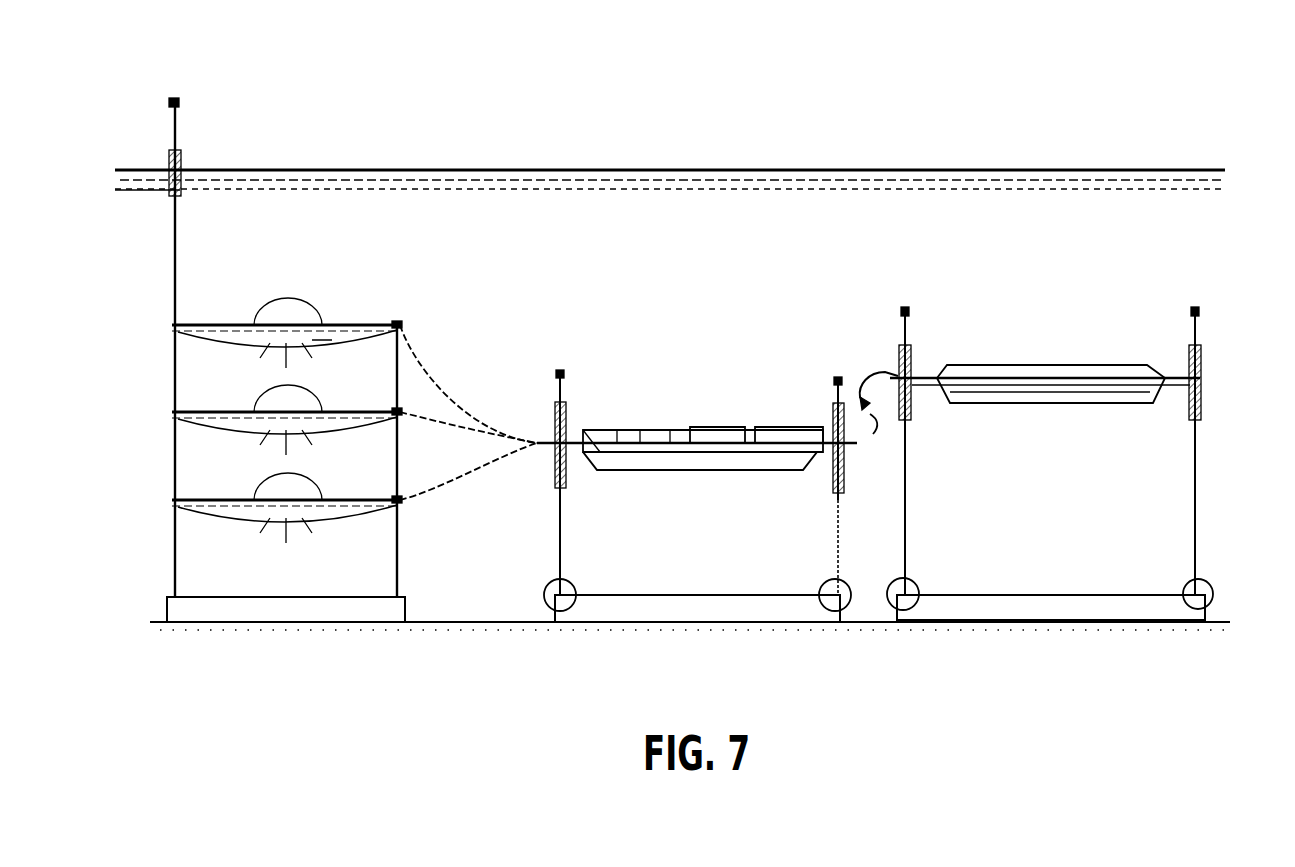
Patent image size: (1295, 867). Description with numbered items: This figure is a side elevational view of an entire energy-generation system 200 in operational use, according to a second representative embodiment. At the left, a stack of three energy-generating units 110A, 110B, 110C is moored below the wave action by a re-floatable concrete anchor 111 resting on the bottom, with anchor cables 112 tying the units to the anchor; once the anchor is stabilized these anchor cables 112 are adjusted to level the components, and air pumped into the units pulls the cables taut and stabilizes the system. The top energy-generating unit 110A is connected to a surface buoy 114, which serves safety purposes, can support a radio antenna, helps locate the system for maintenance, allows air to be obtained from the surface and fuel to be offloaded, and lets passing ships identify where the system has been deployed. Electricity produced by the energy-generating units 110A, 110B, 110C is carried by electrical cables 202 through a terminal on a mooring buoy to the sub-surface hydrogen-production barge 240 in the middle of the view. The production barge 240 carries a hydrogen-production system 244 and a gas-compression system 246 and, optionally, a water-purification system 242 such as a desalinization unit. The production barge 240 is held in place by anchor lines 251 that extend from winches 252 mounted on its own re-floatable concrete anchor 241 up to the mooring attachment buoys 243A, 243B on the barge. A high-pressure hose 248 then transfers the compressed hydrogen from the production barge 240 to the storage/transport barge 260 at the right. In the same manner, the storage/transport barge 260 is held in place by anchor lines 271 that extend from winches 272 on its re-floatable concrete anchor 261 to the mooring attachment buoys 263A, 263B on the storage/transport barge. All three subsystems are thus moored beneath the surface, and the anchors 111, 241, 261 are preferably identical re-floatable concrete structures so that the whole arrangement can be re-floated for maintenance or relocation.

The energy-generation system 200 is at (1095, 272).
The buoy 114 is at (180, 186).
The anchor cables 112 is at (173, 530).
The re-floatable concrete anchor 111 is at (220, 612).
The energy-generating unit 110A is at (222, 331).
The energy-generating unit 110B is at (222, 417).
The energy-generating unit 110C is at (200, 503).
The electrical cables 202 is at (446, 492).
The sub-surface hydrogen-production barge 240 is at (698, 440).
The water-purification system 242 is at (628, 433).
The hydrogen-production system 244 is at (707, 440).
The gas-compression system 246 is at (768, 440).
The mooring attachment buoy 243A is at (548, 488).
The mooring attachment buoy 243B is at (835, 470).
The anchor lines 251 is at (562, 545).
The winches 252 is at (548, 592).
The re-floatable concrete anchor 241 is at (772, 600).
The high-pressure hose 248 is at (880, 373).
The mooring attachment buoy 263A is at (910, 395).
The mooring attachment buoy 263B is at (1193, 395).
The storage/transport barge 260 is at (1080, 400).
The anchor lines 271 is at (905, 500).
The winches 272 is at (915, 580).
The re-floatable concrete anchor 261 is at (1142, 543).